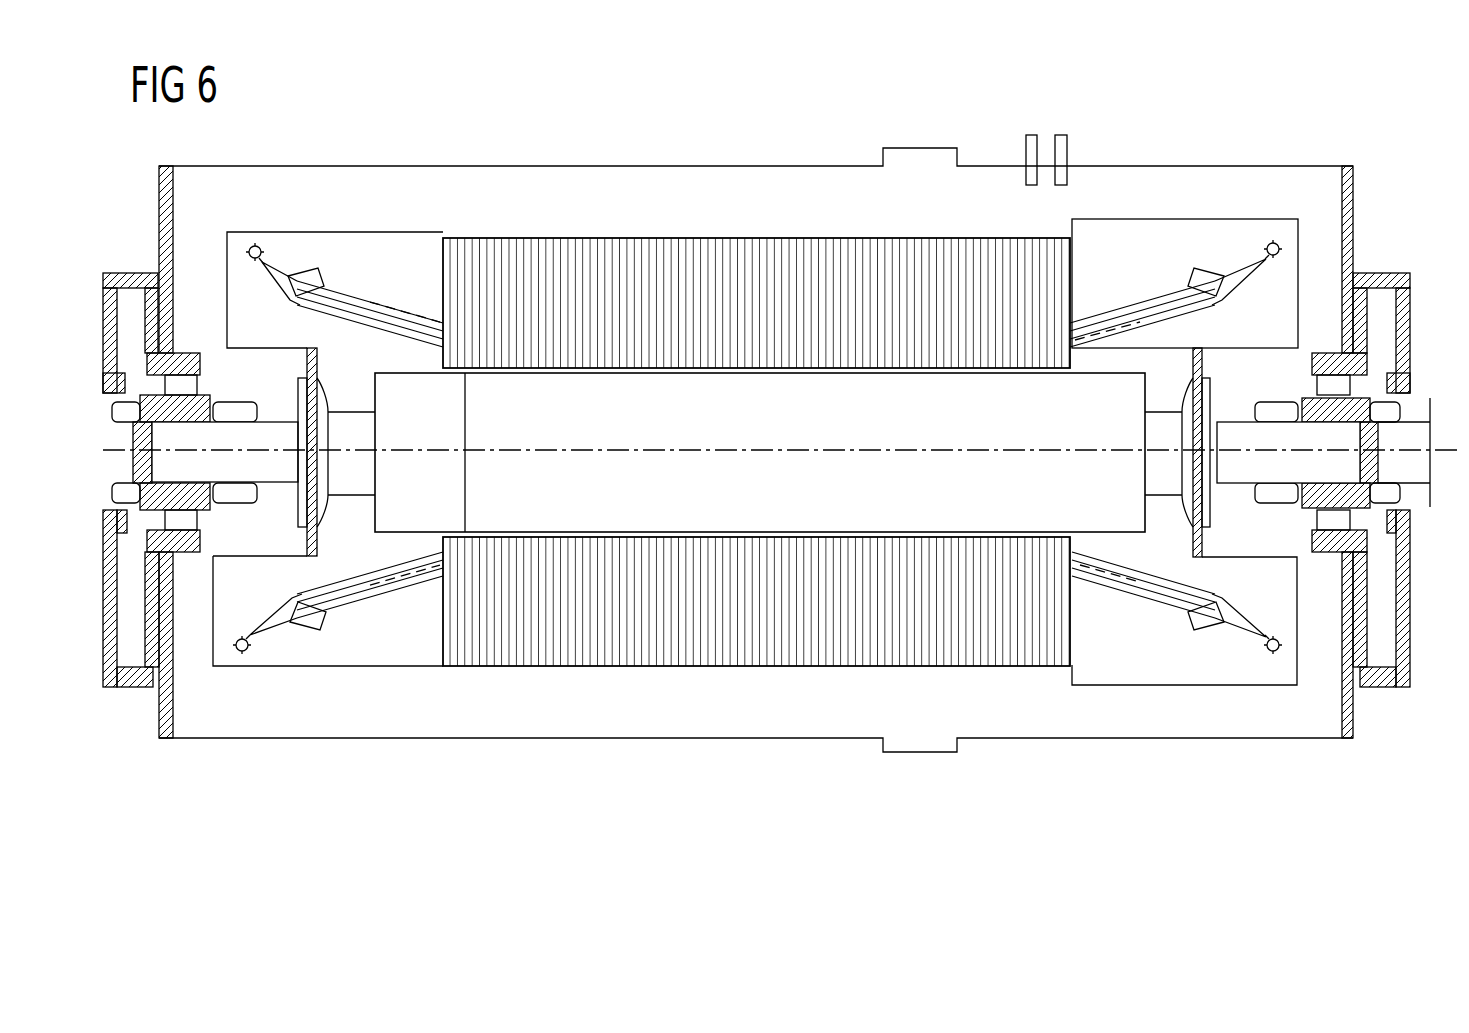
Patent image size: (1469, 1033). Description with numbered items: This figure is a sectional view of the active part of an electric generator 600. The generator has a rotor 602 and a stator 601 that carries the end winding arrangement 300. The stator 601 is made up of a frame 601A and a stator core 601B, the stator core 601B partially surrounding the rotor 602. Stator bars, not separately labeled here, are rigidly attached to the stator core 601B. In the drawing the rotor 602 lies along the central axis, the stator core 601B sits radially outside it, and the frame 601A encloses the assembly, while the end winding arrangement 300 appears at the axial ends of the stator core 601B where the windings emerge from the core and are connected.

The electric generator 600 is at (1303, 115).
The stator 601 is at (1305, 742).
The frame 601A is at (827, 166).
The stator core 601B is at (715, 237).
The rotor 602 is at (633, 410).
The end winding arrangement 300 is at (386, 272).